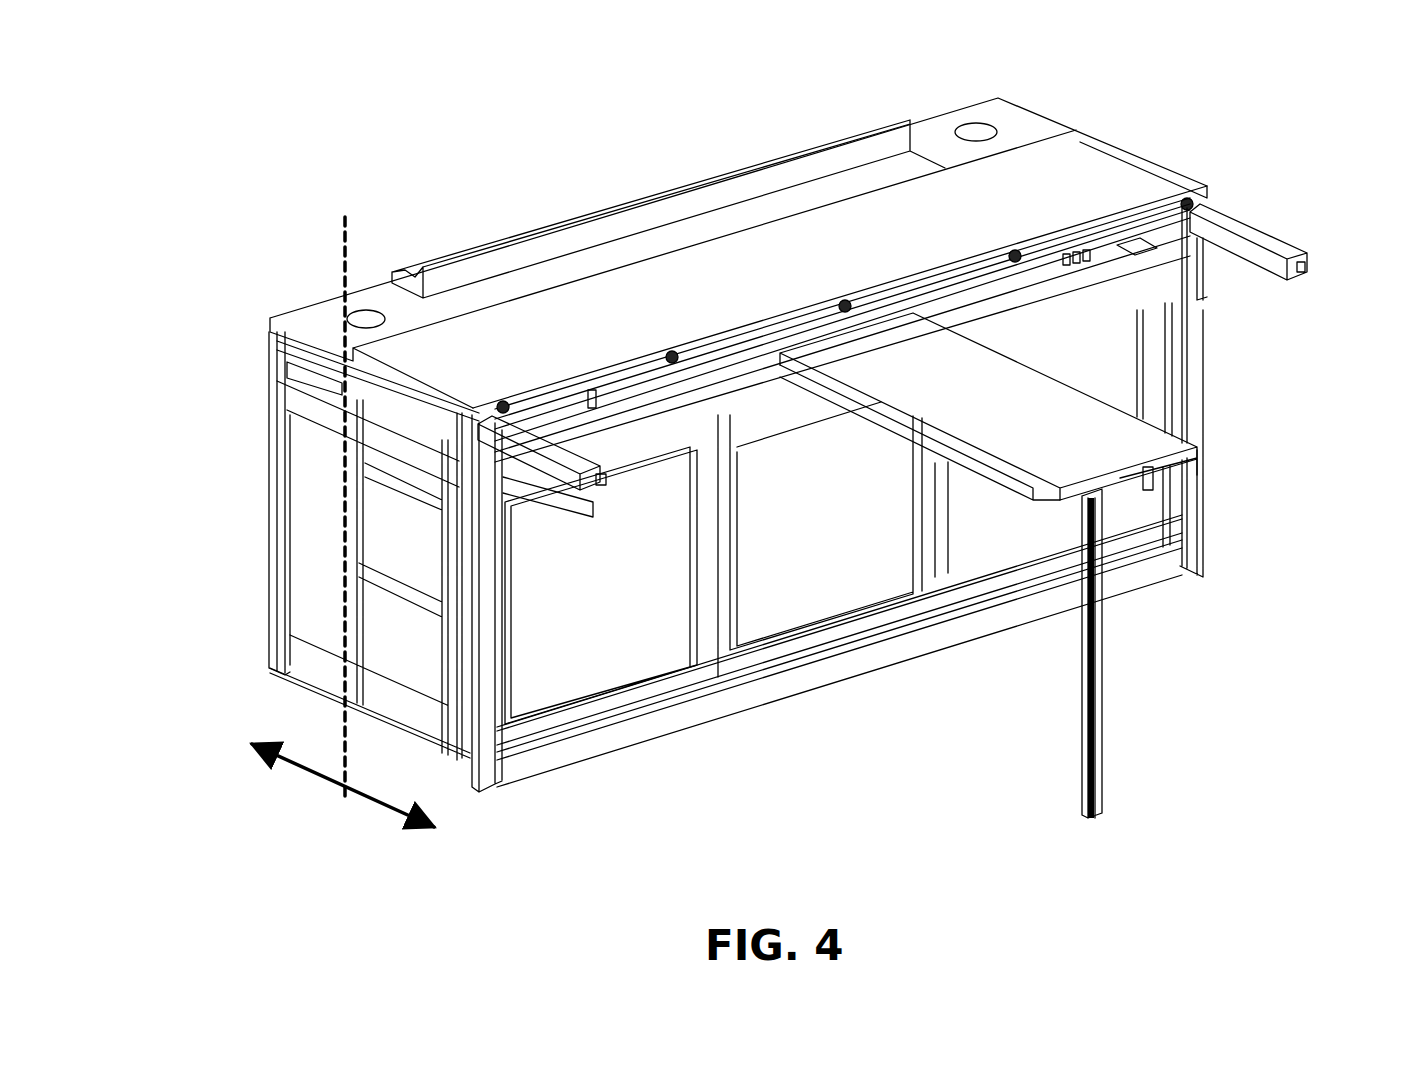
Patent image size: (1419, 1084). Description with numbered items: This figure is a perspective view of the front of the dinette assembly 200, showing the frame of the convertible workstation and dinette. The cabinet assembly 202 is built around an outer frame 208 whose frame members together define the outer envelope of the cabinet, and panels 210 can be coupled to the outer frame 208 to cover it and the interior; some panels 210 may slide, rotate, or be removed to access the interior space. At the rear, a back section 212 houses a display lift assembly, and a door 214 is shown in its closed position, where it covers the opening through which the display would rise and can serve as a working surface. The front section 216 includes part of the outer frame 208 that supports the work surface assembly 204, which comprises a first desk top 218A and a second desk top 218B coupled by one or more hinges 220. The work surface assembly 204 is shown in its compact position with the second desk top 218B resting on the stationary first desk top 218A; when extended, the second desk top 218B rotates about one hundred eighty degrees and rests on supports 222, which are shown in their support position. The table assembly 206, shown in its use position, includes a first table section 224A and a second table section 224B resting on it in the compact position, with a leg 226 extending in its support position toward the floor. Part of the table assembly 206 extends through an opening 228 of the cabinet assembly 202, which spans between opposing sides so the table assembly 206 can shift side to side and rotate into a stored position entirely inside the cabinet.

The dinette assembly 200 is at (270, 96).
The cabinet assembly 202 is at (233, 439).
The work surface assembly 204 is at (828, 224).
The table assembly 206 is at (1258, 472).
The outer frame 208 is at (273, 547).
The panels 210 is at (622, 607).
The back section 212 is at (301, 514).
The door 214 is at (772, 210).
The front section 216 is at (343, 798).
The first desk top 218A is at (1198, 205).
The second desk top 218B is at (1120, 147).
The hinges 220 is at (840, 372).
The supports 222 is at (1265, 267).
The first table section 224A is at (890, 420).
The second table section 224B is at (1036, 411).
The leg 226 is at (1080, 712).
The opening 228 is at (598, 423).